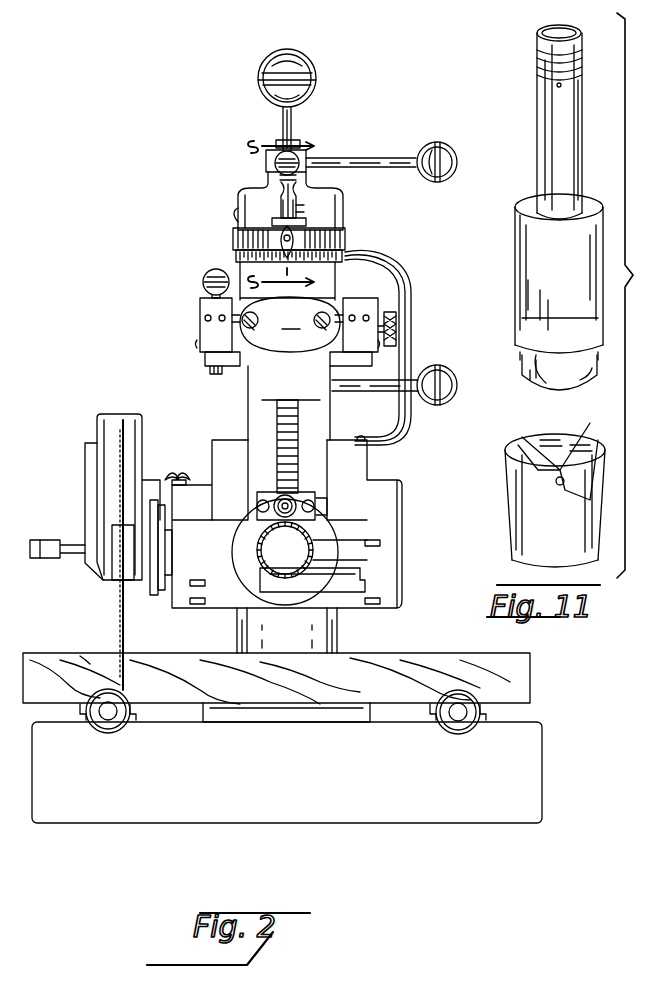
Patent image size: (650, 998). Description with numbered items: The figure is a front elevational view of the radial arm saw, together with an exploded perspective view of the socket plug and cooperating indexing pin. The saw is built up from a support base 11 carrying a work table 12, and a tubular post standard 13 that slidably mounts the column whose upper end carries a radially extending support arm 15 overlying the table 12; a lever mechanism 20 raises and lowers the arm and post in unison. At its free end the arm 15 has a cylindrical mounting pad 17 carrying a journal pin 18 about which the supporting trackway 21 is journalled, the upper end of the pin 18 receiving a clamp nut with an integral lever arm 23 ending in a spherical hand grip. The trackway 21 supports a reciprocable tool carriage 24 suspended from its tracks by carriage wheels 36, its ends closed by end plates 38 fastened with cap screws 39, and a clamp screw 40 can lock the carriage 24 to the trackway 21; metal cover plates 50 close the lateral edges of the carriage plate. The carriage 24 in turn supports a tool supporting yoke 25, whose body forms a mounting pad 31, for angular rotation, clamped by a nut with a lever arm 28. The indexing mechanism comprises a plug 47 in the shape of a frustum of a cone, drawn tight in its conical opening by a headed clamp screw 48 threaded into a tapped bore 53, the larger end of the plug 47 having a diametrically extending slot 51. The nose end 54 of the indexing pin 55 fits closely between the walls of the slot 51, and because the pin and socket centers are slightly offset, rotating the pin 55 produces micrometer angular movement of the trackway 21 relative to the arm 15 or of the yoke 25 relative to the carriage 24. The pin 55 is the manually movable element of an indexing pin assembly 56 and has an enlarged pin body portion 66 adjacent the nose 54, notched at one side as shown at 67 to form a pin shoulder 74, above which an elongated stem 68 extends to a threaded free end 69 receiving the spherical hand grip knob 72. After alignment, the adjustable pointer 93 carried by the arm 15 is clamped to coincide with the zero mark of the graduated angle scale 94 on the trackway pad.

In FIG. 2, the support base 11 is at (524, 816).
In FIG. 2, the work table 12 is at (468, 646).
In FIG. 2, the tubular post standard 13 is at (338, 624).
In FIG. 2, the radially extending support arm 15 is at (234, 174).
In FIG. 2, the cylindrical mounting pad 17 is at (236, 226).
In FIG. 2, the journal pin 18 is at (283, 137).
In FIG. 2, the lever mechanism 20 is at (296, 105).
In FIG. 2, the supporting trackway 21 is at (227, 254).
In FIG. 2, the lever arm 23 is at (380, 159).
In FIG. 2, the tool carriage 24 is at (386, 302).
In FIG. 2, the tool supporting yoke 25 is at (254, 403).
In FIG. 2, the lever arm 28 is at (358, 384).
In FIG. 2, the mounting pad 31 is at (206, 362).
In FIG. 2, the carriage wheels 36 is at (338, 318).
In FIG. 2, the end plates 38 is at (293, 320).
In FIG. 2, the cap screws 39 is at (322, 328).
In FIG. 2, the clamp screw 40 is at (396, 334).
In FIG. 11, the plug 47 is at (530, 540).
In FIG. 2, the headed clamp screw 48 is at (210, 376).
In FIG. 2, the metal cover plates 50 is at (200, 328).
In FIG. 11, the slot 51 is at (568, 442).
In FIG. 11, the tapped bore 53 is at (560, 486).
In FIG. 11, the nose end 54 is at (556, 380).
In FIG. 2, the indexing pin 55 is at (298, 192).
In FIG. 11, the indexing pin 55 is at (528, 127).
In FIG. 2, the indexing pin assembly 56 is at (310, 212).
In FIG. 11, the enlarged pin body portion 66 is at (548, 338).
In FIG. 11, the notch 67 is at (552, 250).
In FIG. 11, the elongated stem 68 is at (553, 160).
In FIG. 11, the threaded free end 69 is at (562, 64).
In FIG. 2, the spherical hand grip knob 72 is at (304, 158).
In FIG. 11, the pin shoulder 74 is at (538, 318).
In FIG. 2, the adjustable pointer 93 is at (294, 237).
In FIG. 2, the graduated angle scale 94 is at (340, 252).